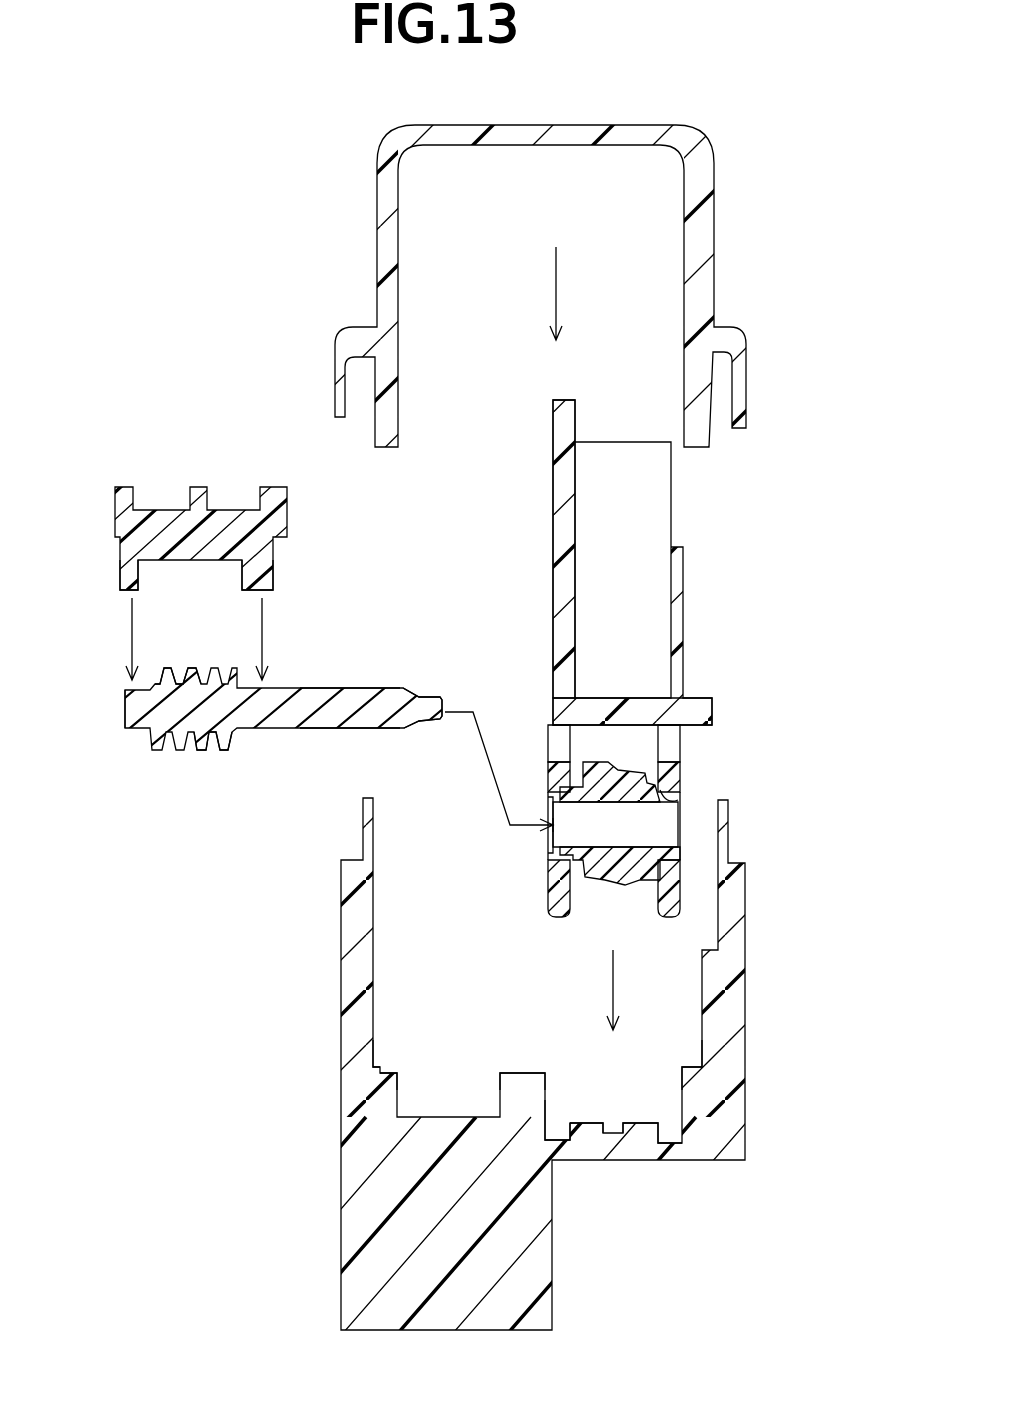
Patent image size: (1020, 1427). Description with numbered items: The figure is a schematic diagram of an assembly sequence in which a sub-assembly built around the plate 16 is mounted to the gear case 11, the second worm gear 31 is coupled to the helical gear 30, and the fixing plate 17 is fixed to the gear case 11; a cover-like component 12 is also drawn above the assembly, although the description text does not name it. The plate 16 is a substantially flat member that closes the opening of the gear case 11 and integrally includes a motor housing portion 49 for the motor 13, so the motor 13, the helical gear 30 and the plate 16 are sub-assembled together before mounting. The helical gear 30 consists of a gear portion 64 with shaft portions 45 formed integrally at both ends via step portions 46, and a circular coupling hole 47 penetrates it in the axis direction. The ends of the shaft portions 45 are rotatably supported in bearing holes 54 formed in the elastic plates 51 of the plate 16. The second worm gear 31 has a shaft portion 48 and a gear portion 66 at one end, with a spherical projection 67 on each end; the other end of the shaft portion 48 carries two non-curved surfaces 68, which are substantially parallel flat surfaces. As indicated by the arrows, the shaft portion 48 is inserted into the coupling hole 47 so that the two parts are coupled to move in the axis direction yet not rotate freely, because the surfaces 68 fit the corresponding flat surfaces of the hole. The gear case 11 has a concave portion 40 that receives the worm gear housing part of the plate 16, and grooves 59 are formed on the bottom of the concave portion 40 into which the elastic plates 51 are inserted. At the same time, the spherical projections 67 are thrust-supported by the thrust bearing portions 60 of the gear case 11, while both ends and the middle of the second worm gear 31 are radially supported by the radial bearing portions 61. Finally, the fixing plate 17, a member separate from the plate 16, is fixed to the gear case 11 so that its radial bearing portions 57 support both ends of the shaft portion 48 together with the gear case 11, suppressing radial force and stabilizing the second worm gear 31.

The gear case 11 is at (342, 985).
The cap 12 is at (716, 213).
The motor 13 is at (671, 514).
The plate 16 is at (712, 705).
The fixing plate 17 is at (175, 510).
The helical gear 30 is at (614, 837).
The second worm gear 31 is at (225, 752).
The concave portion 40 is at (548, 1083).
The shaft portions 45 is at (557, 853).
The step portions 46 is at (680, 795).
The coupling hole 47 is at (688, 810).
The shaft portion 48 is at (363, 688).
The motor housing portion 49 is at (553, 527).
The elastic plates 51 is at (558, 762).
The bearing holes 54 is at (548, 807).
The radial bearing portions 57 is at (118, 570).
The grooves 59 is at (565, 1123).
The thrust bearing portions 60 is at (380, 1065).
The radial bearing portions 61 is at (390, 1073).
The gear portion 64 is at (622, 882).
The gear portion 66 is at (178, 750).
The spherical projections 67 is at (445, 700).
The non-curved surfaces 68 is at (348, 688).